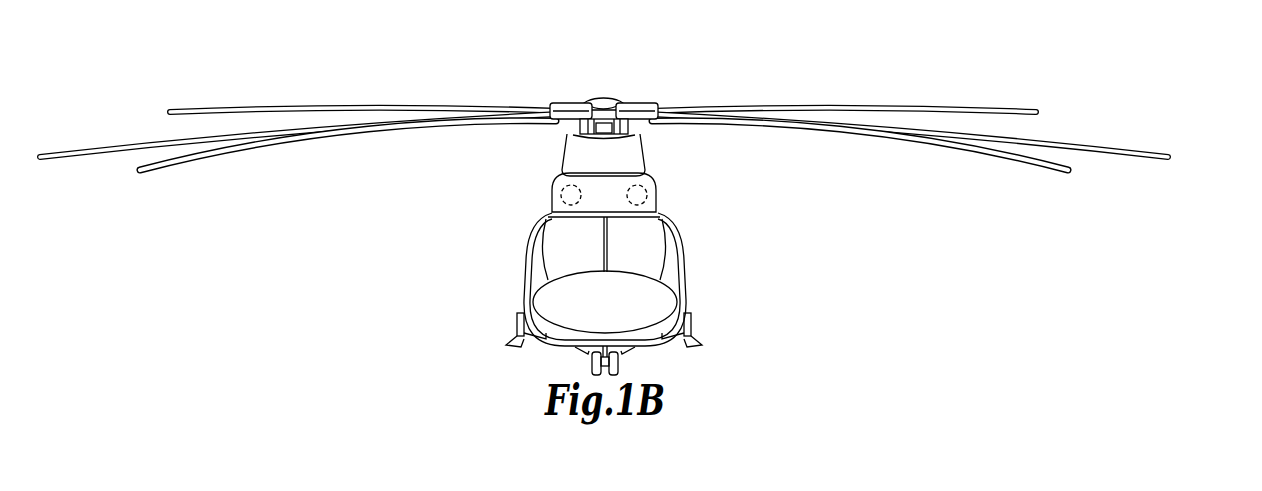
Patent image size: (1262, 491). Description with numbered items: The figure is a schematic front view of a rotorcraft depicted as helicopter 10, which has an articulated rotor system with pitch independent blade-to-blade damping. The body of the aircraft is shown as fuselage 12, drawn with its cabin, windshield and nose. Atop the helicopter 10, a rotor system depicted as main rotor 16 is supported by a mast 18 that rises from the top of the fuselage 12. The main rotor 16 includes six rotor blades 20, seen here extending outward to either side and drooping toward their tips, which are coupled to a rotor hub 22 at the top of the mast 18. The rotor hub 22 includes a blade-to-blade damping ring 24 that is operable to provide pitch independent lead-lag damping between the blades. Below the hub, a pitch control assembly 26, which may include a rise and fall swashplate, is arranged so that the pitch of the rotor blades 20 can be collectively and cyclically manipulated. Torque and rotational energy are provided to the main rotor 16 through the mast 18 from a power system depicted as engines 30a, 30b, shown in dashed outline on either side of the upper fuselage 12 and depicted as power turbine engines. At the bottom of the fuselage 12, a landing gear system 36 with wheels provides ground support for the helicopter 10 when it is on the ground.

The helicopter 10 is at (489, 72).
The fuselage 12 is at (652, 337).
The main rotor 16 is at (917, 100).
The mast 18 is at (607, 134).
The rotor blades 20 is at (950, 150).
The rotor hub 22 is at (622, 103).
The blade-to-blade damping ring 24 is at (603, 108).
The pitch control assembly 26 is at (634, 128).
The engine 30a is at (660, 193).
The engine 30b is at (548, 192).
The landing gear system 36 is at (590, 362).